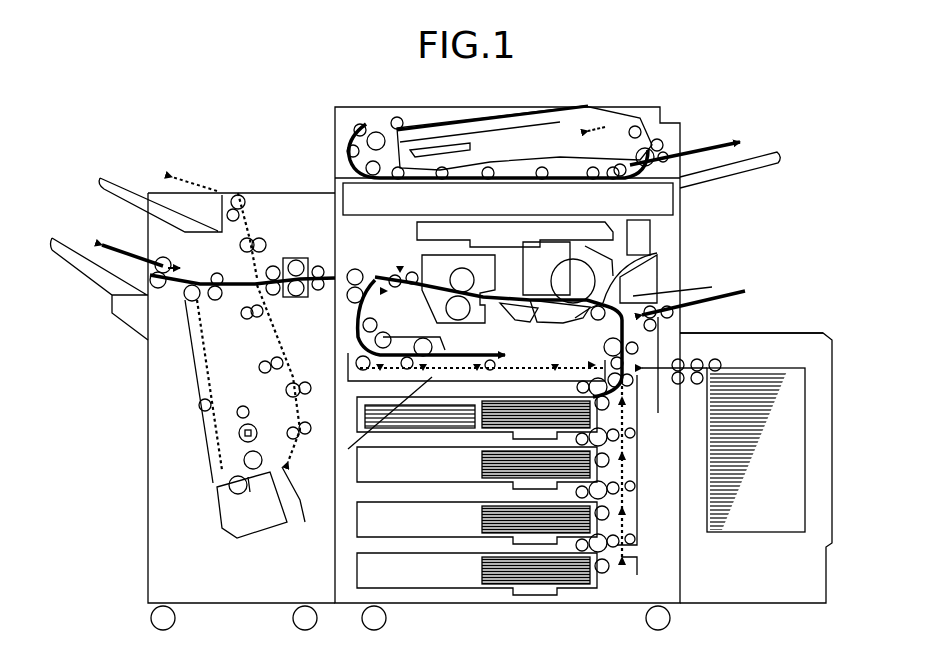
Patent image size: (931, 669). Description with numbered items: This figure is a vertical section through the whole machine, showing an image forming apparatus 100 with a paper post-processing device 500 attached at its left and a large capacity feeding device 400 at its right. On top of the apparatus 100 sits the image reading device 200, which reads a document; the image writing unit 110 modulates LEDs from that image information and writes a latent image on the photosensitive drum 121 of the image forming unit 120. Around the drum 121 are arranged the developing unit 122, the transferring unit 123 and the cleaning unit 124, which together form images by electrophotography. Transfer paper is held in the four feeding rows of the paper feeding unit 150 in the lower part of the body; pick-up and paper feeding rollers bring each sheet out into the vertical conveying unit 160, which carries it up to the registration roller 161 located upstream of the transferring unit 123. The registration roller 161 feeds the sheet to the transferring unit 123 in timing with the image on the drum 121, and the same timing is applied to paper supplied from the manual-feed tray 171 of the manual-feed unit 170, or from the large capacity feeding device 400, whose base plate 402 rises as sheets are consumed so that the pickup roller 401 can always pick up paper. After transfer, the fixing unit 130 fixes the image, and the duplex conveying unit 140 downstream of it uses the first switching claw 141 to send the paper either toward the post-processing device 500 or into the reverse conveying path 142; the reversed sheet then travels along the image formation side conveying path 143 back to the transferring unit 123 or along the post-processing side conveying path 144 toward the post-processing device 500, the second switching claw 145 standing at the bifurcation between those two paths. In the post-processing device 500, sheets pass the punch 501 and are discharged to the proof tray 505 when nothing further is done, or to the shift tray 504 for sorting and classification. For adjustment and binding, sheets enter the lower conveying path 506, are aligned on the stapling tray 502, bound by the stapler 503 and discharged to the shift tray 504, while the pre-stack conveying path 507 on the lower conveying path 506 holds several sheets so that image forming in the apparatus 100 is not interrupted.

The image forming apparatus 100 is at (692, 222).
The image writing unit 110 is at (418, 224).
The image forming unit 120 is at (695, 254).
The photosensitive drum 121 is at (588, 291).
The developing unit 122 is at (645, 280).
The transferring unit 123 is at (575, 318).
The cleaning unit 124 is at (562, 261).
The fixing unit 130 is at (420, 256).
The duplex conveying unit 140 is at (510, 351).
The first switching claw 141 is at (380, 270).
The reverse conveying path 142 is at (440, 343).
The image formation side conveying path 143 is at (348, 449).
The post-processing side conveying path 144 is at (332, 349).
The second switching claw 145 is at (368, 278).
The paper feeding unit 150 is at (344, 585).
The vertical conveying unit 160 is at (637, 522).
The registration roller 161 is at (664, 266).
The manual-feed unit 170 is at (712, 290).
The manual-feed tray 171 is at (760, 302).
The image reading device 200 is at (700, 203).
The large capacity feeding device 400 is at (828, 342).
The pickup roller 401 is at (728, 350).
The base plate 402 is at (774, 534).
The paper post-processing device 500 is at (148, 440).
The punch 501 is at (296, 300).
The stapling tray 502 is at (200, 375).
The stapler 503 is at (230, 525).
The shift tray 504 is at (85, 268).
The proof tray 505 is at (138, 185).
The lower conveying path 506 is at (298, 522).
The pre-stack conveying path 507 is at (273, 382).